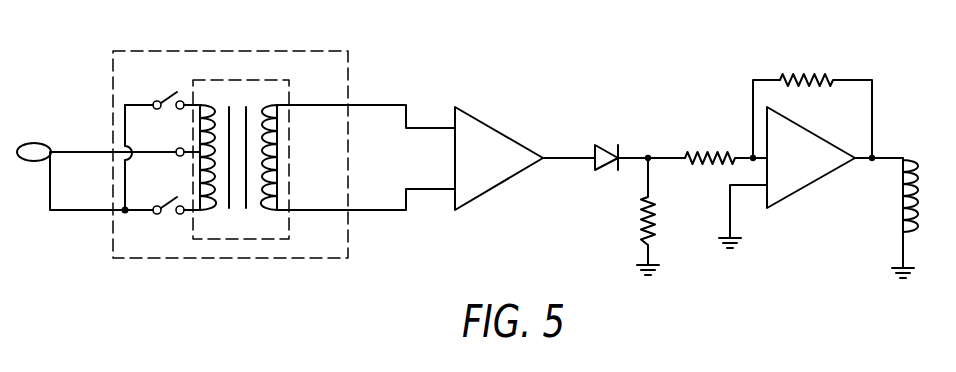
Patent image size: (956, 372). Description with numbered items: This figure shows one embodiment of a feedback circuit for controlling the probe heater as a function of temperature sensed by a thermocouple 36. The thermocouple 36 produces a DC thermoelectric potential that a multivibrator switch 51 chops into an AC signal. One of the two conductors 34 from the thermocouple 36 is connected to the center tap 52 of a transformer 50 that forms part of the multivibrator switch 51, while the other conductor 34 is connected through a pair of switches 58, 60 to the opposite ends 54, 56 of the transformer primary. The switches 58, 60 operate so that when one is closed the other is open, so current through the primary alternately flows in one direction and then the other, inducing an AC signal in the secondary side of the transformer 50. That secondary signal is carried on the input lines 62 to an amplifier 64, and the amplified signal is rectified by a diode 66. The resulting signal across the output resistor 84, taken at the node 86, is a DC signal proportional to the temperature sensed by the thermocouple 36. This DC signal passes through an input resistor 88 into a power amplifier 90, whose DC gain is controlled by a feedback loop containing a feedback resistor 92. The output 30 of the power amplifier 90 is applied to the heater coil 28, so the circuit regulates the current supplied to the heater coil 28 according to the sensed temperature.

The heater coil 28 is at (904, 214).
The output line 30 is at (887, 155).
The conductors 34 is at (69, 155).
The thermocouple 36 is at (45, 142).
The transformer 50 is at (294, 97).
The multivibrator switch 51 is at (348, 93).
The center tap 52 is at (180, 156).
The end of transformer primary 54 is at (180, 111).
The end of transformer primary 56 is at (180, 216).
The switch 58 is at (170, 92).
The switch 60 is at (170, 200).
The amplifier input lines 62 is at (427, 130).
The amplifier 64 is at (510, 170).
The diode 66 is at (608, 167).
The output resistor 84 is at (660, 213).
The junction node 86 is at (663, 150).
The input resistor 88 is at (710, 150).
The power amplifier 90 is at (805, 178).
The feedback resistor 92 is at (808, 72).